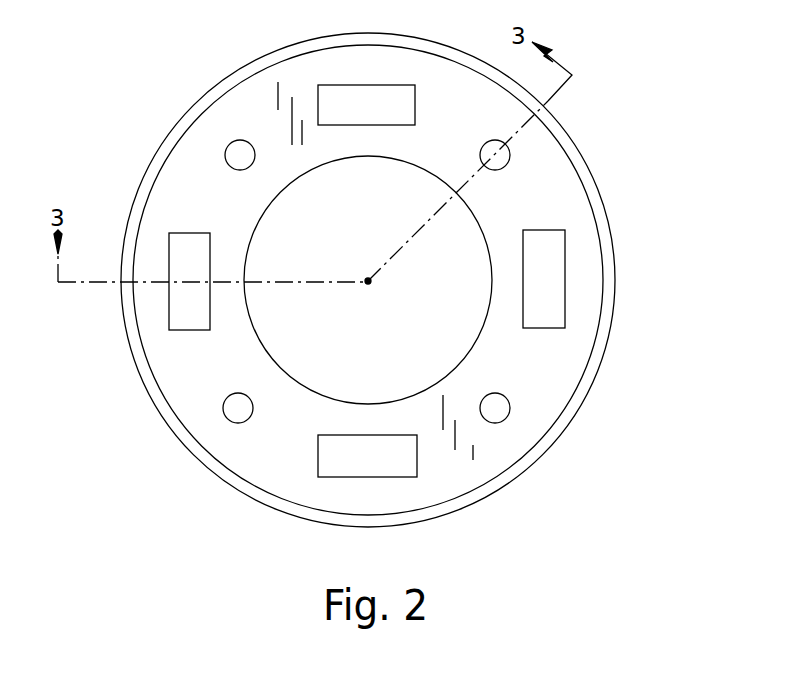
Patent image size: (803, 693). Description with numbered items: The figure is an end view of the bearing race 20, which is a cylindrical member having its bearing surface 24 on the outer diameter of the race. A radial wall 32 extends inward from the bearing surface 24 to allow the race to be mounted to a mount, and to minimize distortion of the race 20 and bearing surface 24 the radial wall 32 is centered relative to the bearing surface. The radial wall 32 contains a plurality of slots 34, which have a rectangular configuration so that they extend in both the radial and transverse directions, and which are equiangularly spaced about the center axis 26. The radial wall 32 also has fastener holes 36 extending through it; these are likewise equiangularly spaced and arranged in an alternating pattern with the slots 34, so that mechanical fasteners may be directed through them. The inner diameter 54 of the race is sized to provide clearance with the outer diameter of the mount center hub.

The bearing race 20 is at (543, 478).
The bearing surface 24 is at (614, 300).
The center axis 26 is at (370, 283).
The radial wall 32 is at (210, 384).
The slots 34 is at (383, 85).
The fastener holes 36 is at (230, 142).
The inner diameter 54 is at (572, 340).